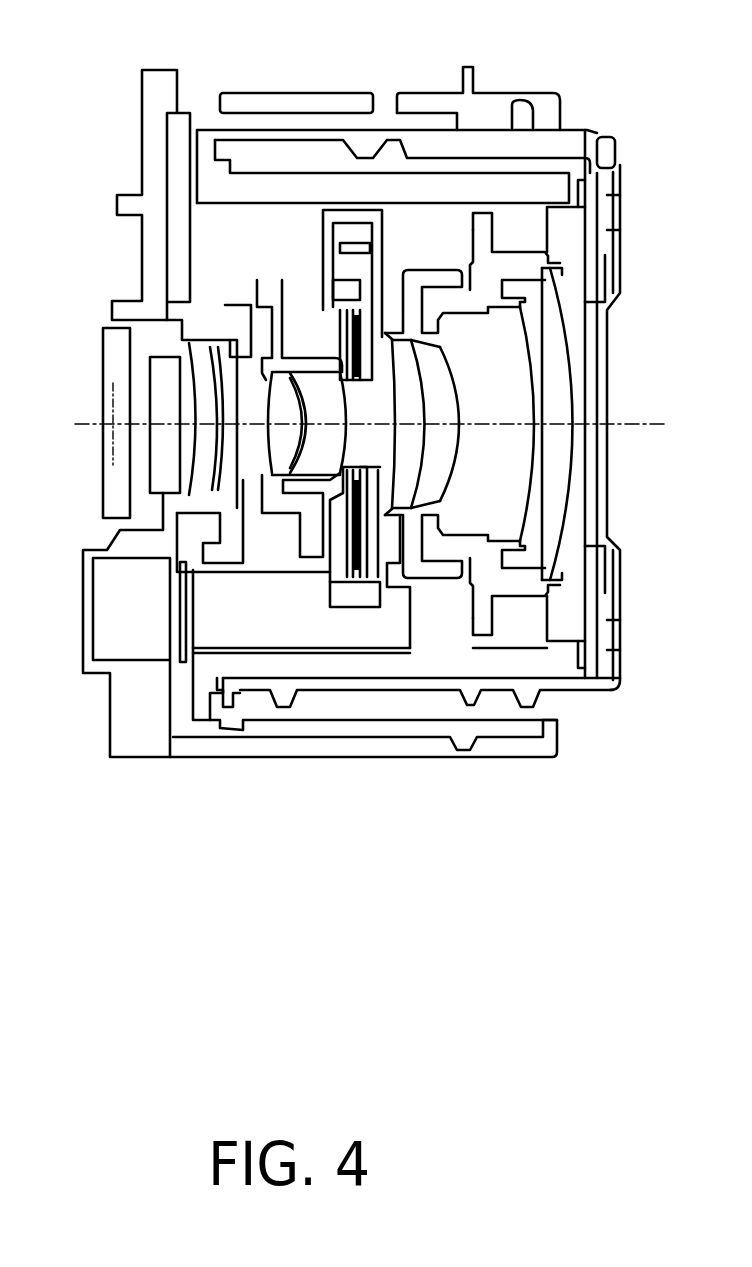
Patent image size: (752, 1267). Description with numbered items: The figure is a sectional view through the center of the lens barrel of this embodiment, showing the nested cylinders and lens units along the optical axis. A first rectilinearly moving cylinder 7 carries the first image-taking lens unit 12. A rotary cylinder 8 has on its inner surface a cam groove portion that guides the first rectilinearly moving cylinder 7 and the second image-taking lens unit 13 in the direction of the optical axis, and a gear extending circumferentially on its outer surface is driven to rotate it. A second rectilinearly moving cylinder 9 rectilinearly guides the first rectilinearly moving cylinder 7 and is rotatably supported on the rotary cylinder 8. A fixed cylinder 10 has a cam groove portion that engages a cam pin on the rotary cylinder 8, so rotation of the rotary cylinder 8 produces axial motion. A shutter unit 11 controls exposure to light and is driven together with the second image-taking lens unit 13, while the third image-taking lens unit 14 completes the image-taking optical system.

The first rectilinearly moving cylinder 7 is at (592, 163).
The rotary cylinder 8 is at (525, 143).
The second rectilinearly moving cylinder 9 is at (453, 193).
The fixed cylinder 10 is at (412, 100).
The shutter unit 11 is at (338, 568).
The first image-taking lens unit 12 is at (403, 477).
The second image-taking lens unit 13 is at (318, 380).
The third image-taking lens unit 14 is at (217, 462).